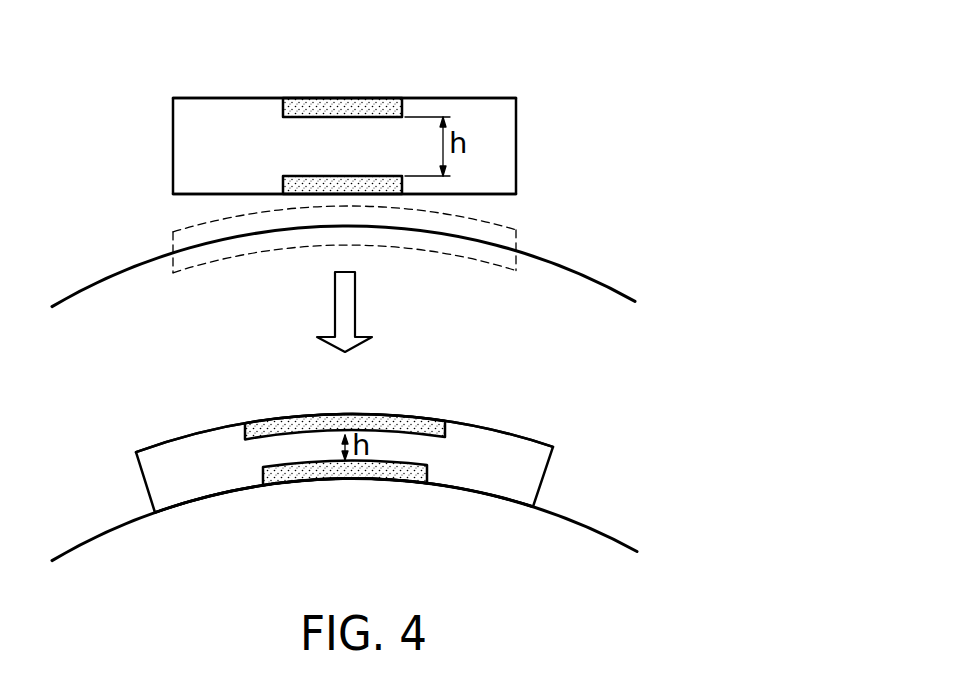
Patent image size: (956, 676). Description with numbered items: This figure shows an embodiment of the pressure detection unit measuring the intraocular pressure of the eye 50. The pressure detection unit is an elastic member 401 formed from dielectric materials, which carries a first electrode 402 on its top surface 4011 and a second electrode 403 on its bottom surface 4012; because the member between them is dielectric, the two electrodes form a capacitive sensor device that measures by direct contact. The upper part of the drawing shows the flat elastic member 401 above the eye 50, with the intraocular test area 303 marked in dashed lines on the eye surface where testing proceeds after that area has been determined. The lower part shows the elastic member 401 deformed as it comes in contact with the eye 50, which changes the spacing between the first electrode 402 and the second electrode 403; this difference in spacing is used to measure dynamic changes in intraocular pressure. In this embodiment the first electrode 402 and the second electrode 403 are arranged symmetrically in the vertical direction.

The eye 50 is at (595, 296).
The intraocular test area 303 is at (172, 232).
The elastic member 401 is at (516, 143).
The top surface 4011 is at (496, 98).
The bottom surface 4012 is at (500, 194).
The first electrode 402 is at (384, 103).
The second electrode 403 is at (321, 182).